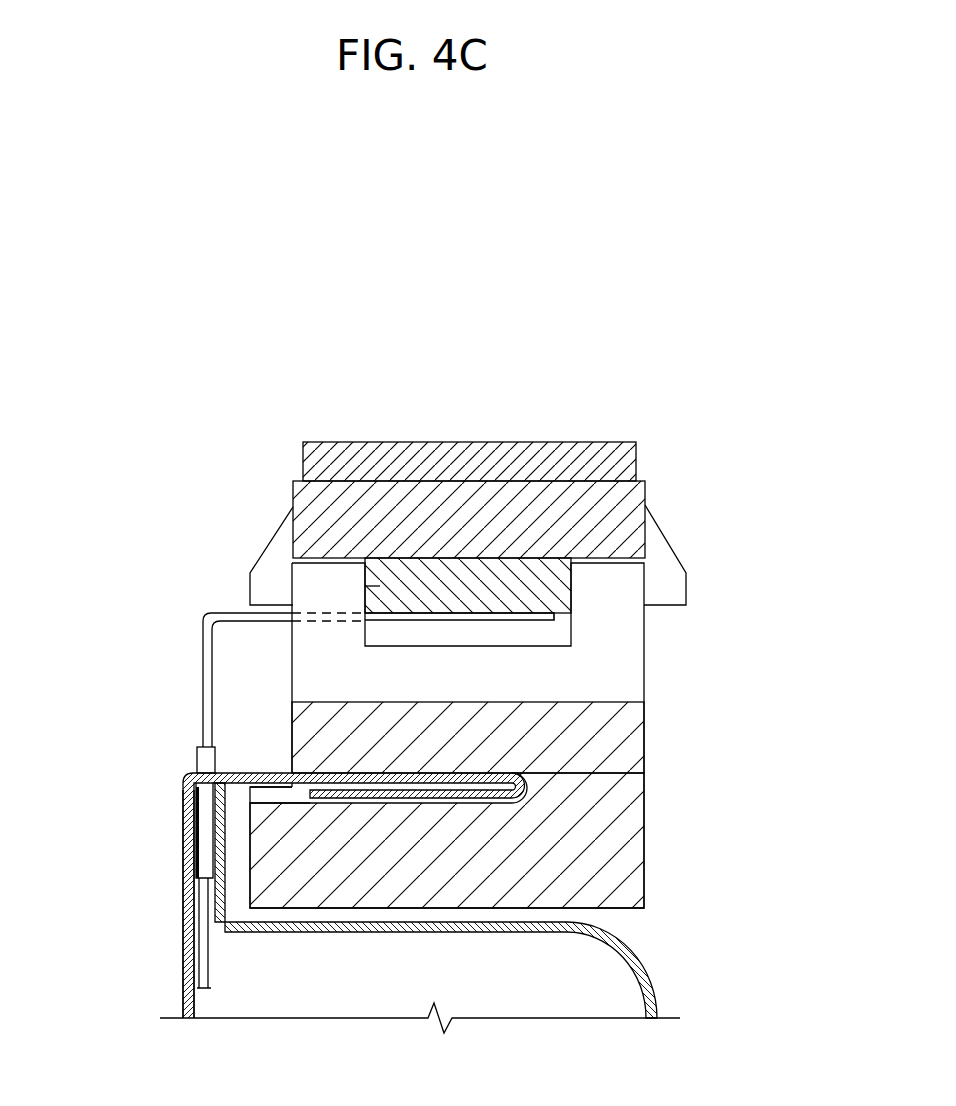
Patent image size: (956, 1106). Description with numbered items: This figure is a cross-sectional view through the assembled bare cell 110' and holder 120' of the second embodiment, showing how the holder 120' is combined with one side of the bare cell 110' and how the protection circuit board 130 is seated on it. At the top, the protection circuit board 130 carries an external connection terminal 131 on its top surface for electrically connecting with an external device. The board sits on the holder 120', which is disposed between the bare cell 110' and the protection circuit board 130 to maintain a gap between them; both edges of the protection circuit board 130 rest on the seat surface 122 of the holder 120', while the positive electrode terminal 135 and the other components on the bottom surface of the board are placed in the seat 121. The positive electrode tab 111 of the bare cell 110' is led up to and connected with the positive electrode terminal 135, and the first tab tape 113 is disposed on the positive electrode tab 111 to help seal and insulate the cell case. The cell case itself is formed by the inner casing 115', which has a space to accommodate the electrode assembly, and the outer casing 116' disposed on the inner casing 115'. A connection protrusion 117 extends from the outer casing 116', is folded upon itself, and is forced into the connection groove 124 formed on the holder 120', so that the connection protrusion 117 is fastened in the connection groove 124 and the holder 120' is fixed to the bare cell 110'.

The external connection terminal 131 is at (480, 452).
The protection circuit board 130 is at (623, 499).
The seat surface 122 is at (598, 564).
The seat 121 is at (484, 640).
The positive electrode terminal 135 is at (380, 586).
The holder 120' is at (520, 706).
The connection groove 124 is at (268, 798).
The bare cell 110' is at (274, 893).
The outer casing 116' is at (125, 904).
The positive electrode tab 111 is at (207, 638).
The first tab tape 113 is at (205, 758).
The connection protrusion 117 is at (205, 815).
The inner casing 115' is at (496, 900).